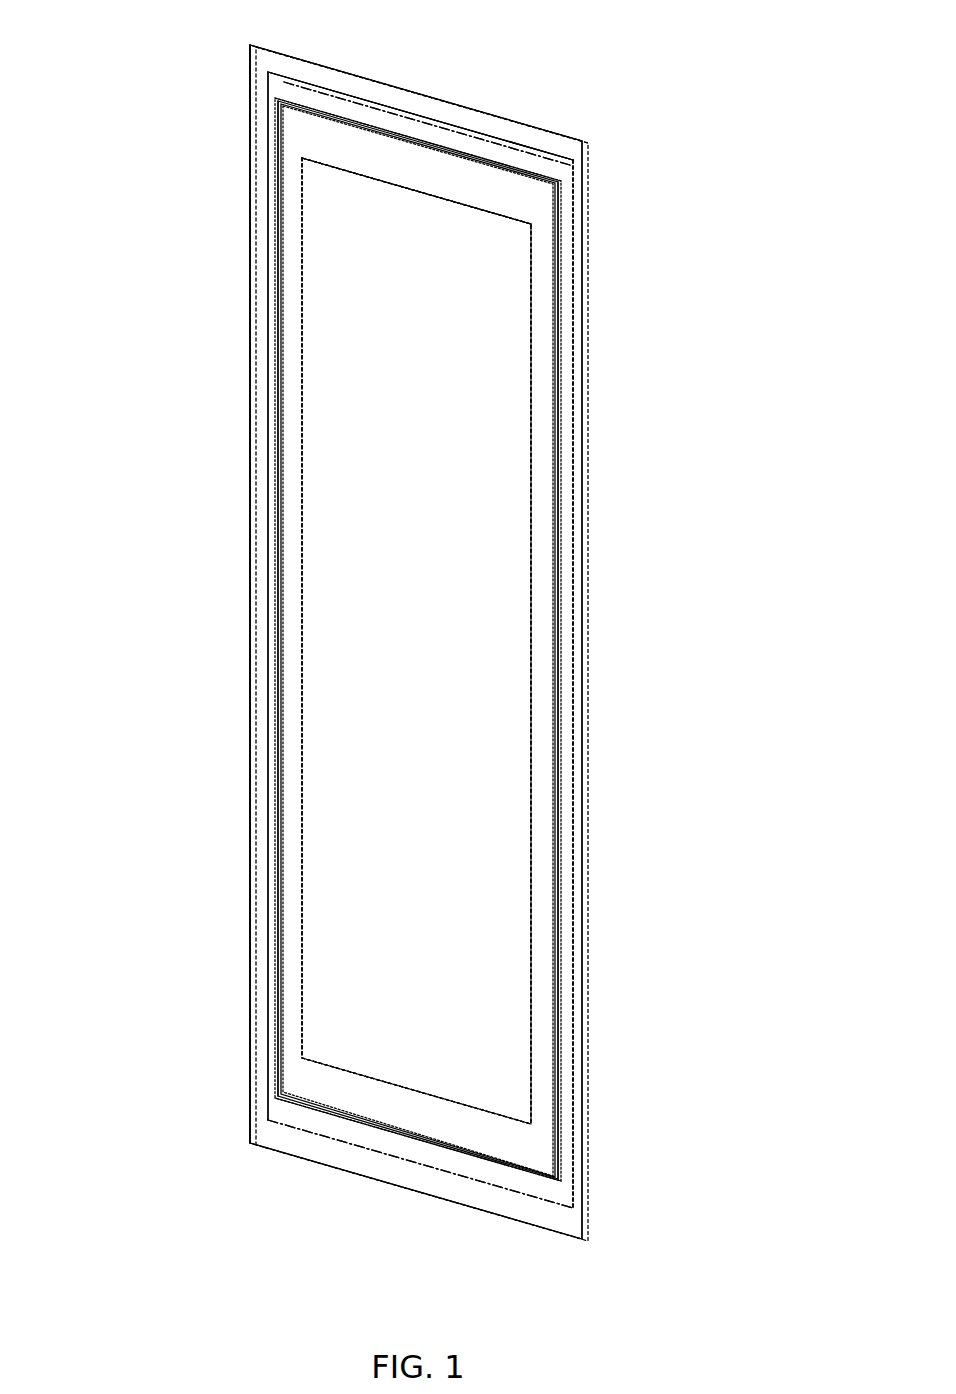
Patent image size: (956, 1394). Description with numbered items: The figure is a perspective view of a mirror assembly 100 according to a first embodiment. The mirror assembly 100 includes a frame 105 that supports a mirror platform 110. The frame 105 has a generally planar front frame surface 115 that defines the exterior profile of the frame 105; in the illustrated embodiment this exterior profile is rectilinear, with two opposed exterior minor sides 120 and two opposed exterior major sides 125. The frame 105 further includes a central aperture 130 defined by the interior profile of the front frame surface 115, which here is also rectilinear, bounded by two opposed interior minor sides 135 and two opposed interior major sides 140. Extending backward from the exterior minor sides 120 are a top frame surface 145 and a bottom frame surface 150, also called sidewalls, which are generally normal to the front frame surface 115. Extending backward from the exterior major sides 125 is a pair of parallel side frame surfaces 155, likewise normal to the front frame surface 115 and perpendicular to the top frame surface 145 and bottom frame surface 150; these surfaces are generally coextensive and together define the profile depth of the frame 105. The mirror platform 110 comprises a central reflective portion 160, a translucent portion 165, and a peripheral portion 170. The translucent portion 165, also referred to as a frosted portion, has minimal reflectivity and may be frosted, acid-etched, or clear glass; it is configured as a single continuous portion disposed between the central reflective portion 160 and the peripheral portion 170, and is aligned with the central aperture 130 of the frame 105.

The mirror assembly 100 is at (113, 100).
The frame 105 is at (585, 167).
The mirror platform 110 is at (252, 328).
The front frame surface 115 is at (278, 85).
The exterior minor sides 120 is at (287, 77).
The exterior major sides 125 is at (250, 113).
The central aperture 130 is at (403, 301).
The interior minor sides 135 is at (435, 150).
The interior major sides 140 is at (282, 238).
The top frame surface 145 is at (543, 150).
The bottom frame surface 150 is at (389, 1172).
The side frame surfaces 155 is at (577, 262).
The central reflective portion 160 is at (405, 422).
The translucent portion 165 is at (380, 160).
The peripheral portion 170 is at (385, 92).